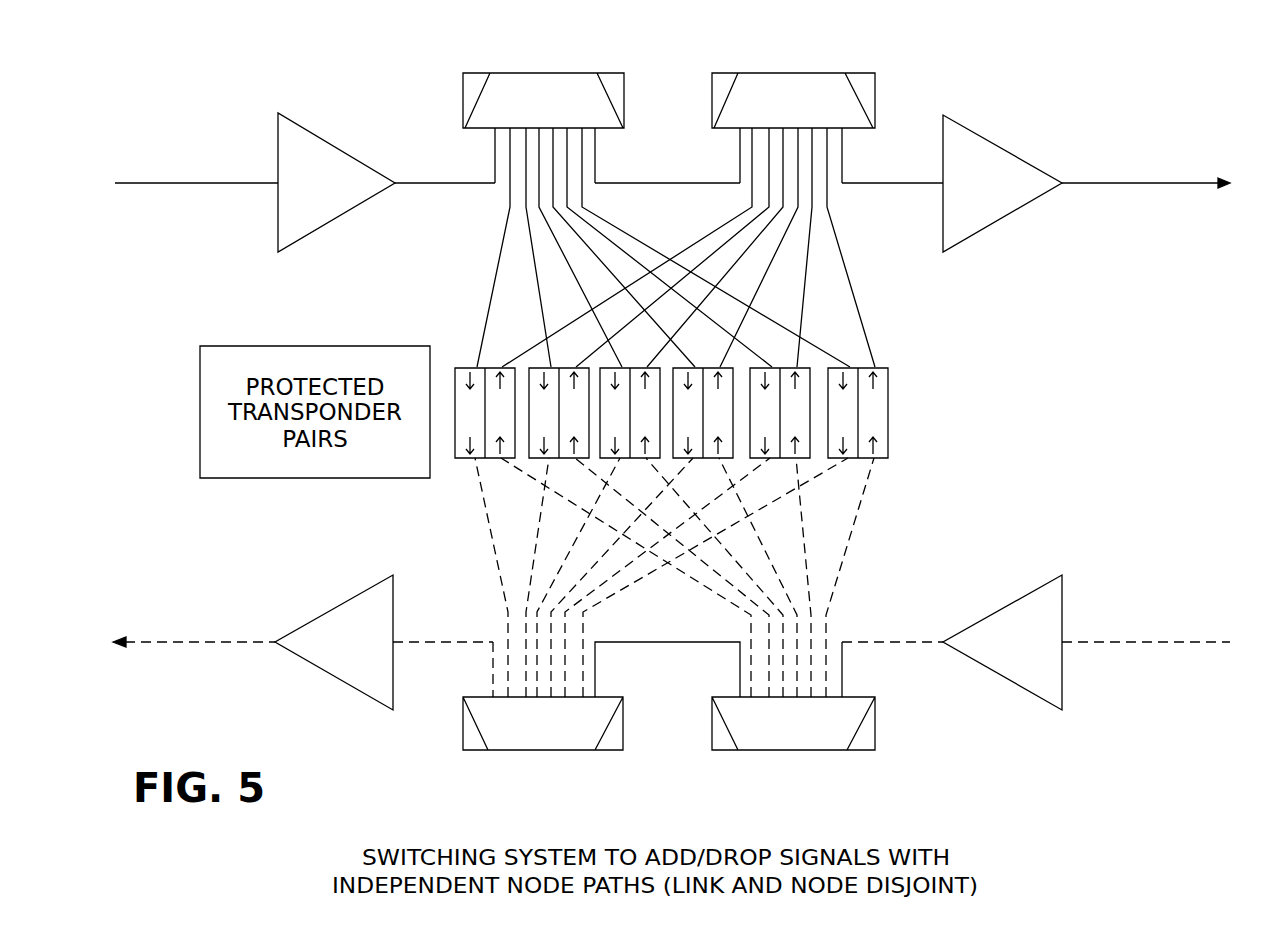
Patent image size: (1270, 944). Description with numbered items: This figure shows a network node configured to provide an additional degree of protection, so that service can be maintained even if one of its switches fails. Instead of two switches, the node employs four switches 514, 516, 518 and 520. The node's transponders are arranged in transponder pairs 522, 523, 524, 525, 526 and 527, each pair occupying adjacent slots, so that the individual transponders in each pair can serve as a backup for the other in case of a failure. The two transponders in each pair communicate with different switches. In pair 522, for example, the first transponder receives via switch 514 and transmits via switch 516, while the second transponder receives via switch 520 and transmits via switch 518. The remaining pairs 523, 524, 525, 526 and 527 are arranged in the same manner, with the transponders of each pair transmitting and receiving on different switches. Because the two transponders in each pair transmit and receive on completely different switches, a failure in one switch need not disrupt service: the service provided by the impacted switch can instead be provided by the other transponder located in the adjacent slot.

The switch 514 is at (545, 73).
The switch 518 is at (793, 73).
The switch 516 is at (540, 752).
The switch 520 is at (790, 752).
The transponder pair 522 is at (456, 333).
The transponder pair 523 is at (493, 466).
The transponder pair 524 is at (540, 501).
The transponder pair 525 is at (803, 367).
The transponder pair 526 is at (841, 476).
The transponder pair 527 is at (900, 436).